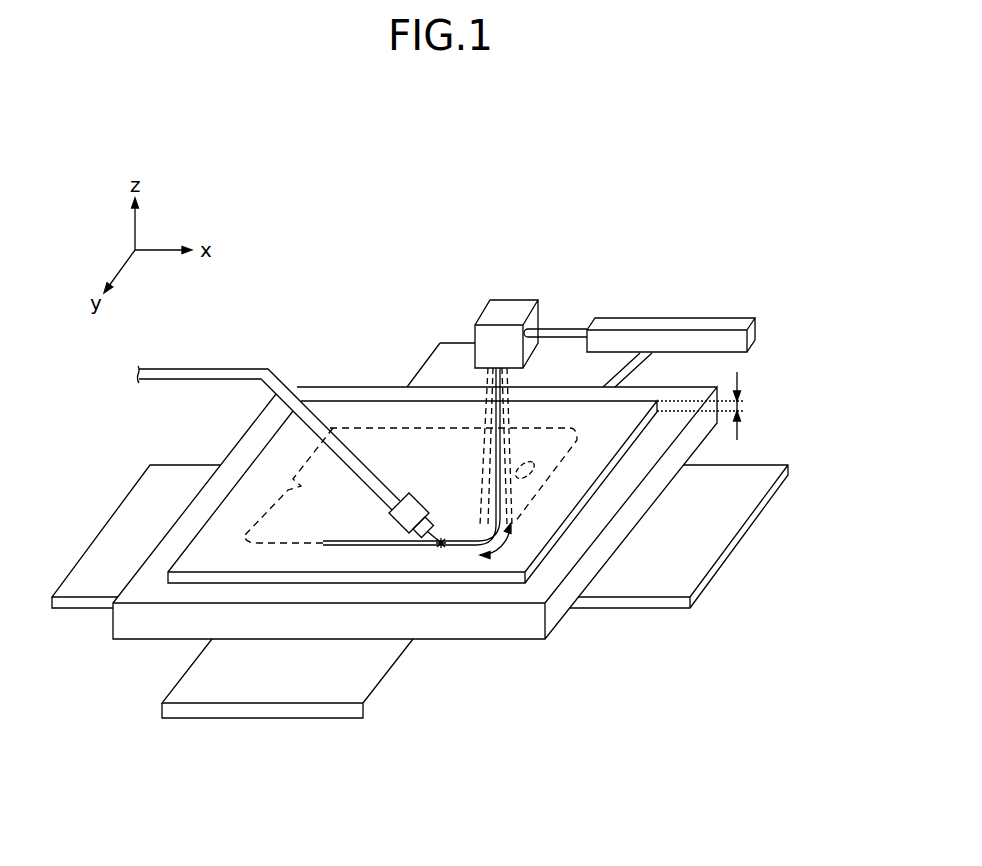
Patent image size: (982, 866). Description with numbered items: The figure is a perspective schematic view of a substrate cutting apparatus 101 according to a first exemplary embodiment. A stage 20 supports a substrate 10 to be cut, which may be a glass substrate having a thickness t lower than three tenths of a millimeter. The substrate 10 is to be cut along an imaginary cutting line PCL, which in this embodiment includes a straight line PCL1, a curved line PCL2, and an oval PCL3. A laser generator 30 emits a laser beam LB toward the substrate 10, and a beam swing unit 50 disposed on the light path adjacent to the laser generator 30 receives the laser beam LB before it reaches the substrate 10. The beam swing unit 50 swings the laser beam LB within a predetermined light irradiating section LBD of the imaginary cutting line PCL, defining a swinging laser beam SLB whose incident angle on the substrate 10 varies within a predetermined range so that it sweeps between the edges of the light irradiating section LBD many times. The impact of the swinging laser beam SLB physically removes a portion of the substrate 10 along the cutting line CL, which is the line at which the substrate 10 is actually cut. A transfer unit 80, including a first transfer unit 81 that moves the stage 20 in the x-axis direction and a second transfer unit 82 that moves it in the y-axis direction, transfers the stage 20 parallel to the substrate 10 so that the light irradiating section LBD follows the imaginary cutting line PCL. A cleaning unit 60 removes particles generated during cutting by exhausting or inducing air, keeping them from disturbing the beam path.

The substrate cutting apparatus 101 is at (425, 170).
The substrate 10 is at (567, 535).
The stage 20 is at (570, 634).
The laser generator 30 is at (680, 306).
The beam swing unit 50 is at (517, 290).
The cleaning unit 60 is at (230, 359).
The transfer unit 80 is at (420, 645).
The first transfer unit 81 is at (83, 603).
The second transfer unit 82 is at (287, 712).
The cutting line CL is at (420, 557).
The laser beam LB is at (560, 327).
The light irradiating section LBD is at (500, 550).
The imaginary cutting line PCL is at (538, 497).
The straight line PCL1 is at (367, 418).
The curved line PCL2 is at (243, 543).
The oval PCL3 is at (534, 470).
The swinging laser beam SLB is at (495, 414).
The thickness t is at (706, 406).